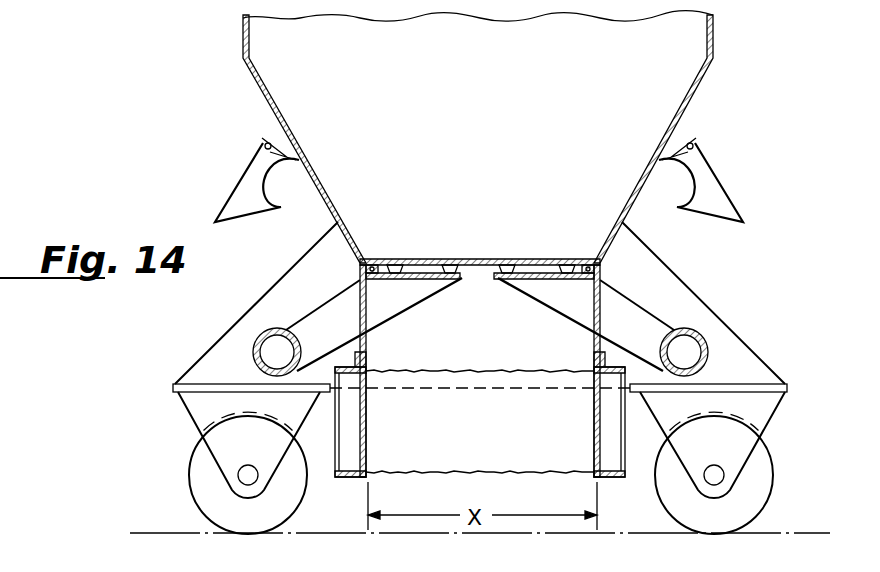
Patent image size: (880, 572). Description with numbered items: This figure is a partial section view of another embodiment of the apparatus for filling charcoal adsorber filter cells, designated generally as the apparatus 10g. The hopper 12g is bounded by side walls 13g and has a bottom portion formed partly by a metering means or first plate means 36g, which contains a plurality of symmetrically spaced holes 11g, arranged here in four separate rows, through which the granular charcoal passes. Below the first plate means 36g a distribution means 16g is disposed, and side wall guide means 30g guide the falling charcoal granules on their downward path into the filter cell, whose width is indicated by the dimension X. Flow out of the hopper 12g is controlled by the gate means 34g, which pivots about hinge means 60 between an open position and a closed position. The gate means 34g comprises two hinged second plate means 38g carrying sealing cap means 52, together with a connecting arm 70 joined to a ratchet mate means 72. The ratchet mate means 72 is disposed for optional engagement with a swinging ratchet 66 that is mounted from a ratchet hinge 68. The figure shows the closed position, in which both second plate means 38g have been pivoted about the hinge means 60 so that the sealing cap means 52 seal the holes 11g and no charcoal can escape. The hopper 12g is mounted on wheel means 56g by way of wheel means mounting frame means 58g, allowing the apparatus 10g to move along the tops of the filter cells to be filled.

The apparatus for filling charcoal adsorber filter cells 10g is at (706, 78).
The hopper 12g is at (481, 92).
The side walls 13g is at (242, 46).
The ratchet hinge 68 is at (263, 147).
The swinging ratchet 66 is at (246, 193).
The hinge means 60 is at (372, 258).
The holes 11g is at (450, 263).
The first plate means 36g is at (478, 258).
The sealing cap means 52 is at (462, 281).
The second plate means 38g is at (414, 282).
The gate means 34g is at (360, 274).
The connecting arm 70 is at (625, 306).
The ratchet mate means 72 is at (254, 342).
The wheel means mounting frame means 58g is at (195, 372).
The wheel means 56g is at (198, 478).
The side wall guide means 30g is at (366, 426).
The distribution means 16g is at (473, 373).